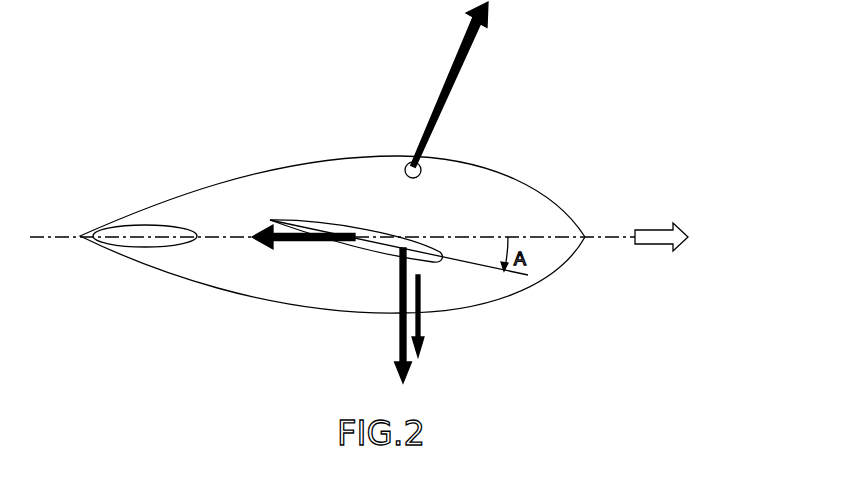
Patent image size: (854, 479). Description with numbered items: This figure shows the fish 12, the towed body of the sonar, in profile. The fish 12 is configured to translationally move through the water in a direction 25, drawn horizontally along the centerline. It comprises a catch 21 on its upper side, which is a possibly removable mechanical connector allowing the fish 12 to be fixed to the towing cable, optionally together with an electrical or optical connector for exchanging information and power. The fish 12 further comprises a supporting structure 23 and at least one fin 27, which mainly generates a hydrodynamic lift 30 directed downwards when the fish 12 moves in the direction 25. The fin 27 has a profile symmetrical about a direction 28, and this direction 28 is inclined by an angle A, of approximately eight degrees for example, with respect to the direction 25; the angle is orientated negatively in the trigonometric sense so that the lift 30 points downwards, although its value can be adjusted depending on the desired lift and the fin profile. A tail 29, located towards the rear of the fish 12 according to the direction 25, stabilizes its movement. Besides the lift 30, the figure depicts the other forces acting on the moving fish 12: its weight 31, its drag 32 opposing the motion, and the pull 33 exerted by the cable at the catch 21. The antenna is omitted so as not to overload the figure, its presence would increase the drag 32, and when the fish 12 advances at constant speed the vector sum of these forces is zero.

The fish 12 is at (317, 77).
The catch 21 is at (409, 163).
The supporting structure 23 is at (230, 180).
The direction 25 is at (653, 229).
The fin 27 is at (343, 222).
The direction 28 is at (480, 267).
The tail 29 is at (147, 227).
The hydrodynamic lift 30 is at (397, 321).
The weight 31 is at (428, 322).
The drag 32 is at (283, 243).
The pull 33 is at (468, 58).